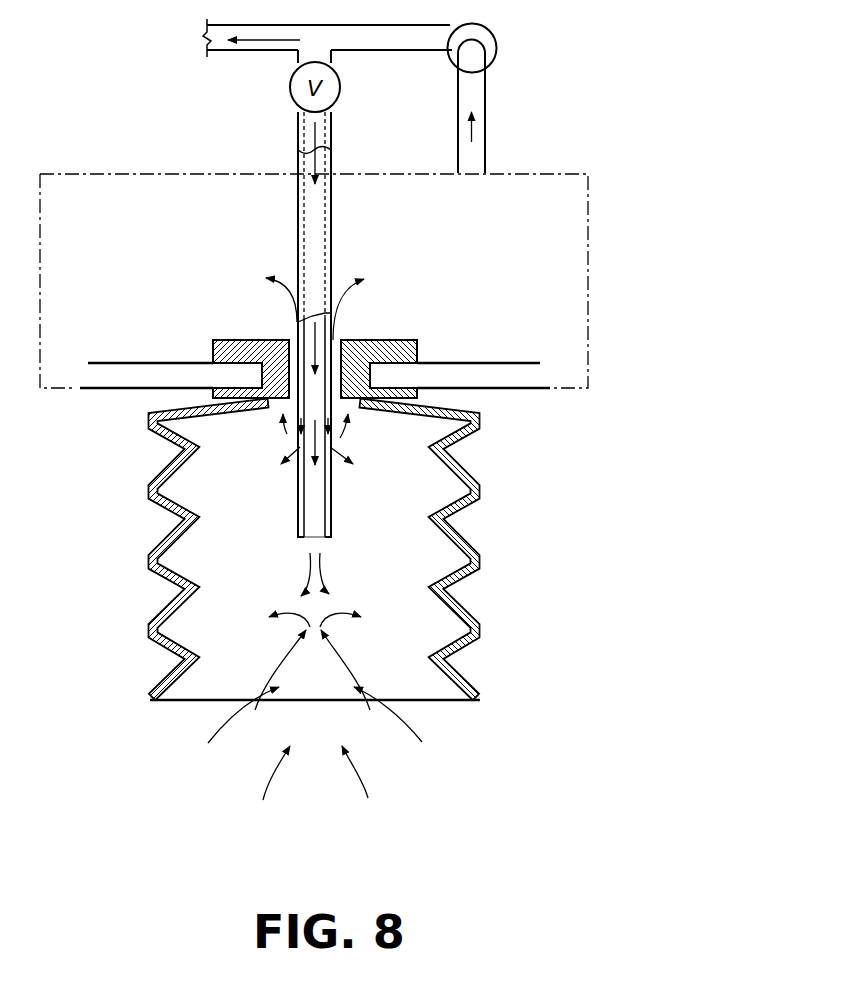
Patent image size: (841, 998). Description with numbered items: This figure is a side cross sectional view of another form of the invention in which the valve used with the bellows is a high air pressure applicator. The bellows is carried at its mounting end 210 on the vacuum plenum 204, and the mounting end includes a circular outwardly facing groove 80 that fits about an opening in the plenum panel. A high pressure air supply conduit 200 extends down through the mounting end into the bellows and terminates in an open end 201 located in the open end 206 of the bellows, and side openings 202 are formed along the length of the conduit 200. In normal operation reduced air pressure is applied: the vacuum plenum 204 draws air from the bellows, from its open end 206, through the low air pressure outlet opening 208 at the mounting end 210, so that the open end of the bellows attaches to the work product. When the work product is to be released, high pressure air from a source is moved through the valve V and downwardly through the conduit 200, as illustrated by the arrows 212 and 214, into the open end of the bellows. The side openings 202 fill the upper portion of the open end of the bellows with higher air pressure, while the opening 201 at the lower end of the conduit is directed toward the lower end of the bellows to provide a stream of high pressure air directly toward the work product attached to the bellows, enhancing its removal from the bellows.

The circular outwardly facing groove 80 is at (313, 332).
The high pressure air supply conduit 200 is at (331, 248).
The open end of the conduit 201 is at (313, 538).
The side openings 202 is at (297, 448).
The vacuum plenum 204 is at (496, 263).
The open end of the bellows 206 is at (427, 702).
The low air pressure outlet opening 208 is at (343, 340).
The mounting end of the bellows 210 is at (298, 138).
The arrows 212 is at (307, 568).
The arrows 214 is at (352, 431).